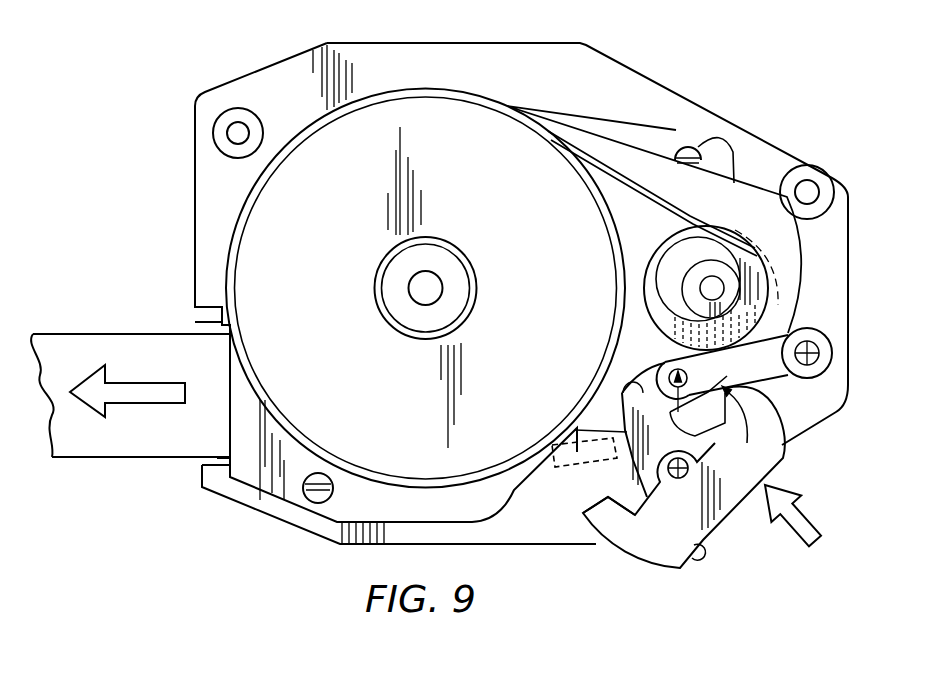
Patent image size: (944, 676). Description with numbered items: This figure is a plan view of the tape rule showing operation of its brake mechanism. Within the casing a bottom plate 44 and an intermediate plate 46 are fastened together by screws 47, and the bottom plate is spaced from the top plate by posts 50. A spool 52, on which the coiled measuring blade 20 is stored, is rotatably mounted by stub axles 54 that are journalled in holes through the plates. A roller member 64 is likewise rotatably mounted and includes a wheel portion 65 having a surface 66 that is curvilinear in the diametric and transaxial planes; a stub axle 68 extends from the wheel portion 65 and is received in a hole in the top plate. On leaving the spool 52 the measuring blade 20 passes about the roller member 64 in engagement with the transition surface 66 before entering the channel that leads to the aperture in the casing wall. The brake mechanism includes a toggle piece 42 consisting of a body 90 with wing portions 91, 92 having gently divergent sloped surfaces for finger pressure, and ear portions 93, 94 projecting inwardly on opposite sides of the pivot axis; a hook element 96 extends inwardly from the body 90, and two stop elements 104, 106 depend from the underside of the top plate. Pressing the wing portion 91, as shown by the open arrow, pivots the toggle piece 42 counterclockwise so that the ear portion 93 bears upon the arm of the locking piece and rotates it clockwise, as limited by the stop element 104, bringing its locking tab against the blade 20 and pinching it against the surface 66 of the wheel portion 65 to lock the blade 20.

The measuring blade 20 is at (128, 440).
The toggle piece 42 is at (672, 574).
The bottom plate 44 is at (436, 66).
The intermediate plate 46 is at (640, 130).
The screws 47 is at (700, 148).
The posts 50 is at (238, 108).
The spool 52 is at (262, 250).
The stub axles 54 is at (417, 282).
The roller member 64 is at (636, 285).
The wheel portion 65 is at (676, 242).
The surface 66 is at (645, 318).
The stub axle 68 is at (716, 280).
The body 90 is at (727, 480).
The wing portion 91 is at (786, 462).
The wing portion 92 is at (690, 547).
The ear portion 93 is at (767, 397).
The ear portion 94 is at (593, 540).
The hook element 96 is at (606, 382).
The stop element 104 is at (775, 330).
The stop element 106 is at (570, 420).